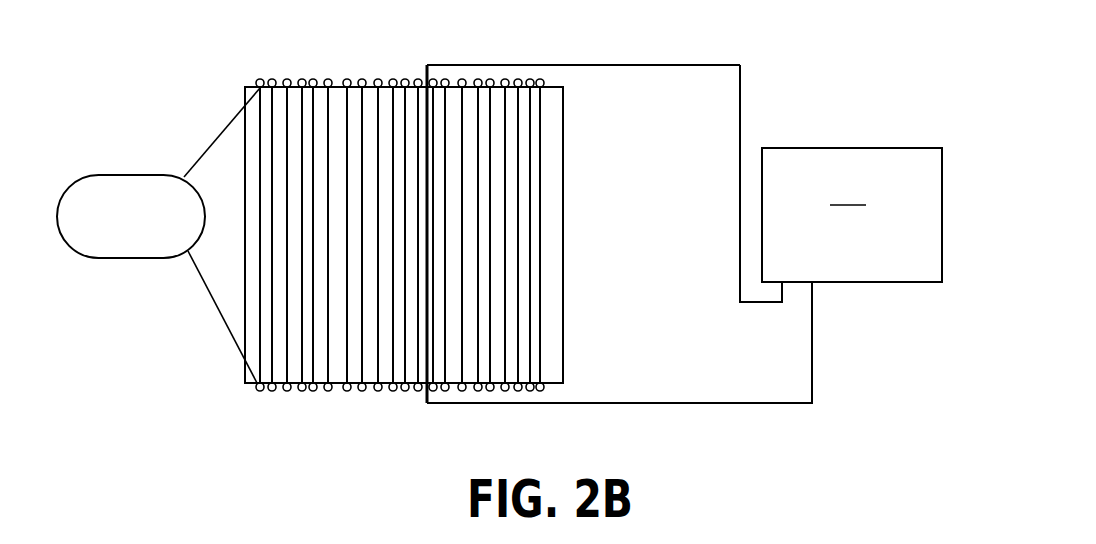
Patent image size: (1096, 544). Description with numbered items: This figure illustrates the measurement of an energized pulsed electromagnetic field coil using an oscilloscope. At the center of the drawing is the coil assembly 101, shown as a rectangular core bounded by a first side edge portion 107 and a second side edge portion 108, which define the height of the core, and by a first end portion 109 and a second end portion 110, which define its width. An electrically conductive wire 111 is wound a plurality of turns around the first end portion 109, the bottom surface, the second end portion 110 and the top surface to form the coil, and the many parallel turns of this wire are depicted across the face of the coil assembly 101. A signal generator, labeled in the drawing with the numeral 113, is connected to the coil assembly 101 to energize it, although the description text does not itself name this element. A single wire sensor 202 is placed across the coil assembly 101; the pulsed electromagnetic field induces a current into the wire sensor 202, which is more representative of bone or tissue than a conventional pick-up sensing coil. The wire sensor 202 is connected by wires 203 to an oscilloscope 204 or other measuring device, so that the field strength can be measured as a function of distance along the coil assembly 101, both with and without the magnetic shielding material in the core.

The coil assembly 101 is at (560, 80).
The first side edge portion 107 is at (244, 201).
The second side edge portion 108 is at (563, 271).
The first end portion 109 is at (337, 389).
The second end portion 110 is at (338, 80).
The electrically conductive wire 111 is at (377, 80).
The signal generator 113 is at (131, 259).
The wire sensor 202 is at (430, 211).
The wires 203 is at (811, 338).
The oscilloscope 204 is at (852, 215).